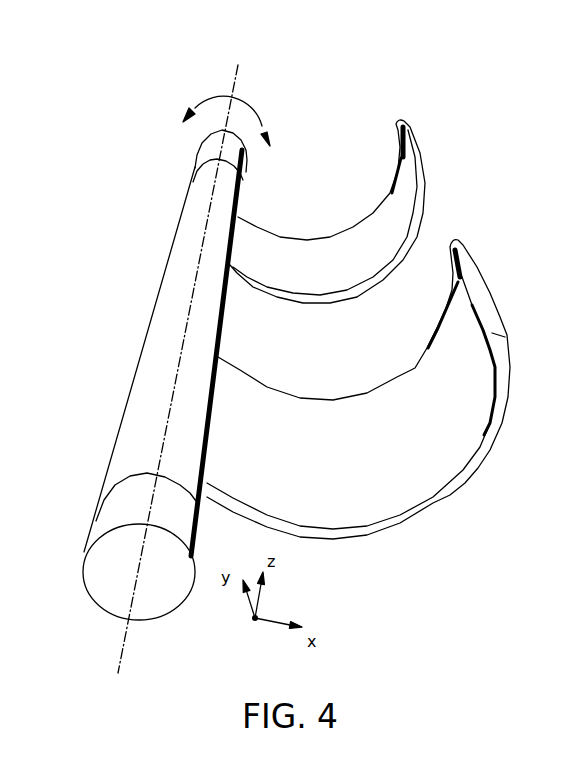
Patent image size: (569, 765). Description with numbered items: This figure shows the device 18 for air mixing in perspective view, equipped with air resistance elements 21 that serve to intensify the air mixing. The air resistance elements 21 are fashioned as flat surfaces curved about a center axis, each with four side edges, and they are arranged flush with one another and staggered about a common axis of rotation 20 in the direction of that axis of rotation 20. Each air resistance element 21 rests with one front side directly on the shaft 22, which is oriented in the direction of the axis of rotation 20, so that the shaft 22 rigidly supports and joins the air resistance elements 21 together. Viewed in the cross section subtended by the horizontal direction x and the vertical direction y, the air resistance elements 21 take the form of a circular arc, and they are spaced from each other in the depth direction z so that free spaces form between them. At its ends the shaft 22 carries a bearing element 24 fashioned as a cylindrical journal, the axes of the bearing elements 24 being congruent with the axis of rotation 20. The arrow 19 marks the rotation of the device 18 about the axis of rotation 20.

The device for air mixing 18 is at (284, 320).
The direction of rotation 19 is at (208, 96).
The axis of rotation 20 is at (115, 667).
The air resistance elements 21 is at (427, 185).
The shaft 22 is at (140, 435).
The bearing element 24 is at (212, 152).